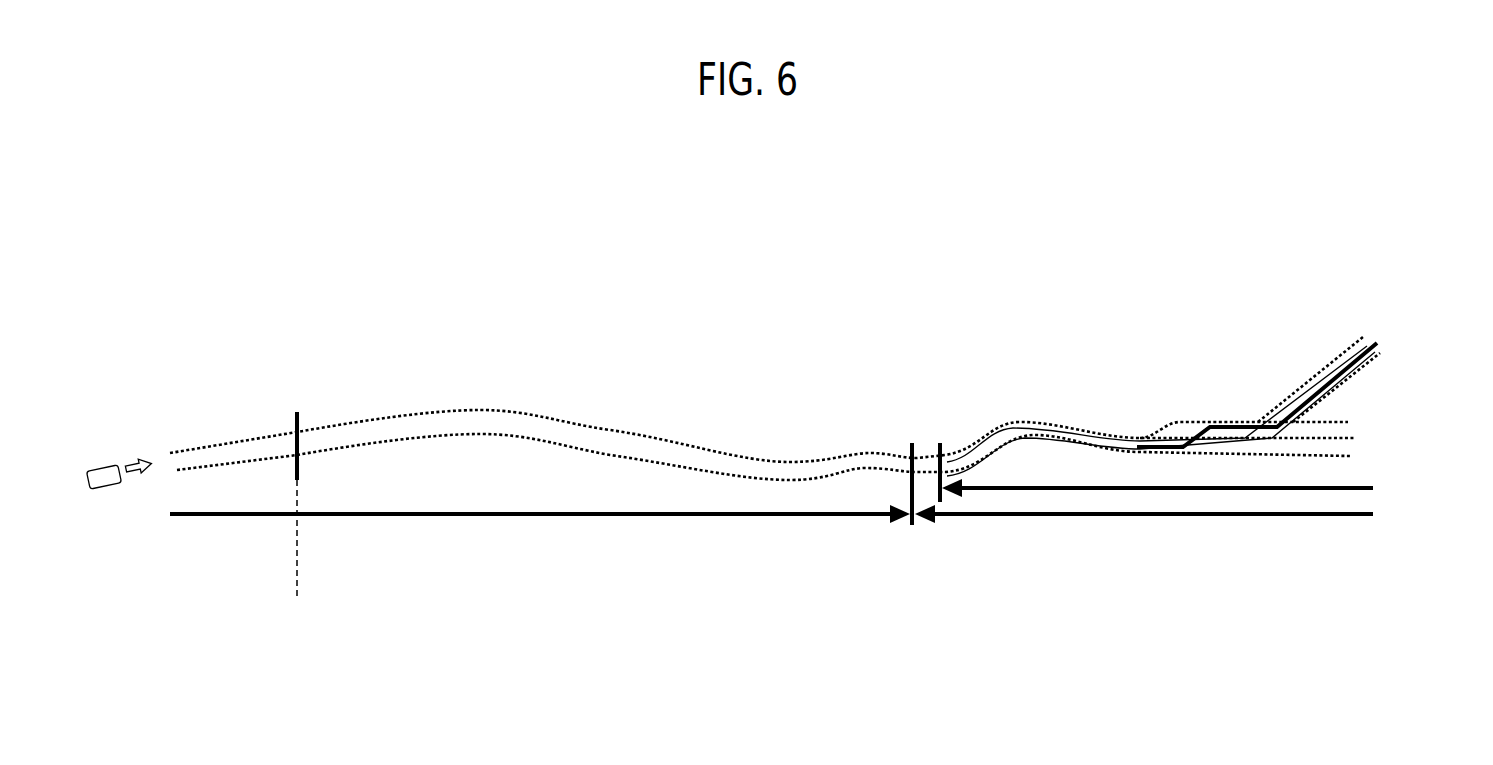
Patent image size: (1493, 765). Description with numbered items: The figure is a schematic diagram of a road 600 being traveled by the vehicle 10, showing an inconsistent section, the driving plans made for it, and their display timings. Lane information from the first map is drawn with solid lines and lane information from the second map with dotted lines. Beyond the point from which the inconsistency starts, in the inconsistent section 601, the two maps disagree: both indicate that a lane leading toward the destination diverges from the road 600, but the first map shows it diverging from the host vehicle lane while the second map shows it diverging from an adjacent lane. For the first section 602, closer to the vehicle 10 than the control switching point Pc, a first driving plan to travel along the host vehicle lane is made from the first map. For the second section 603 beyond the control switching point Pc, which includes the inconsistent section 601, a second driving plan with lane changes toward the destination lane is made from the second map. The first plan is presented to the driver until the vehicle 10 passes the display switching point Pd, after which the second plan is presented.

The vehicle 10 is at (98, 462).
The road 600 is at (1387, 280).
The inconsistent section 601 is at (1085, 492).
The first section 602 is at (584, 518).
The second section 603 is at (1190, 517).